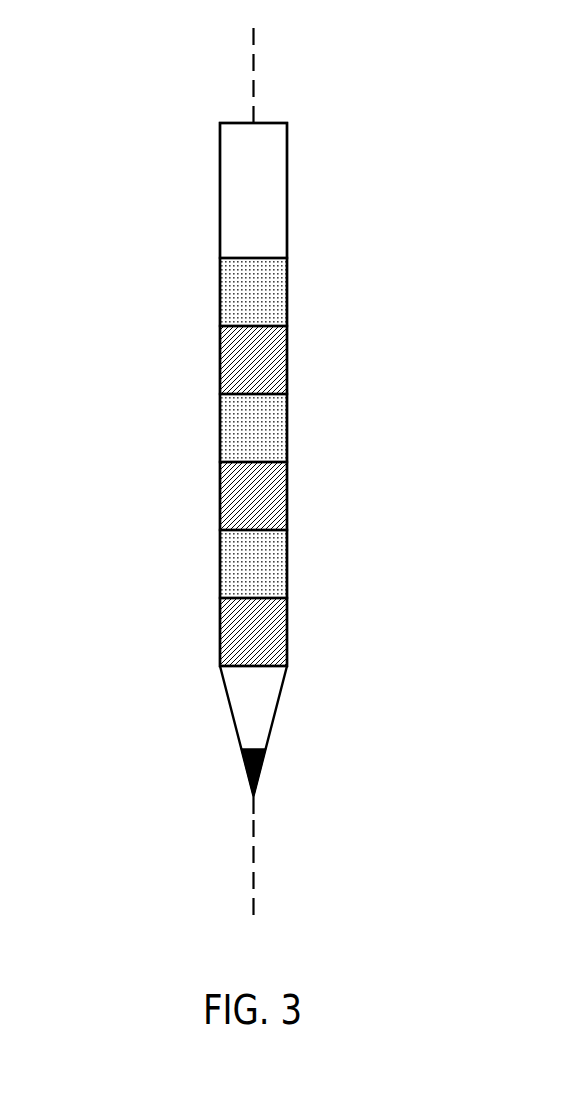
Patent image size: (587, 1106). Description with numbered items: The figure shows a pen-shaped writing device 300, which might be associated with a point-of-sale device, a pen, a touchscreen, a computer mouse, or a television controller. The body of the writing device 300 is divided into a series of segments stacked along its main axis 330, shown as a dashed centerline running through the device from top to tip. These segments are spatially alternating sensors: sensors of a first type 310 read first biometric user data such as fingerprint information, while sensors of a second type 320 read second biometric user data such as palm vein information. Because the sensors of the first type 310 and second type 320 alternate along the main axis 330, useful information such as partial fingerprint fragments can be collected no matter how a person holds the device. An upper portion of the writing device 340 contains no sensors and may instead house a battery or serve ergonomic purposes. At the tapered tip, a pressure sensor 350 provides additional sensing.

The writing device 300 is at (120, 271).
The sensors of a first type 310 is at (288, 293).
The sensors of a second type 320 is at (288, 358).
The main axis 330 is at (254, 58).
The portion of the writing device without sensors 340 is at (288, 191).
The pressure sensor 350 is at (262, 783).